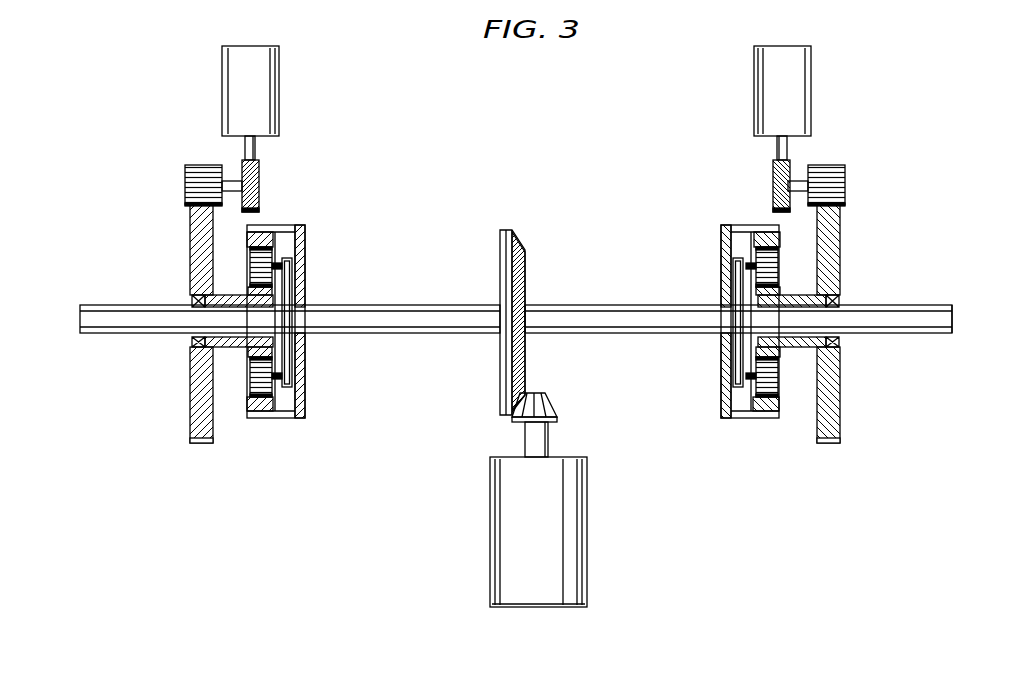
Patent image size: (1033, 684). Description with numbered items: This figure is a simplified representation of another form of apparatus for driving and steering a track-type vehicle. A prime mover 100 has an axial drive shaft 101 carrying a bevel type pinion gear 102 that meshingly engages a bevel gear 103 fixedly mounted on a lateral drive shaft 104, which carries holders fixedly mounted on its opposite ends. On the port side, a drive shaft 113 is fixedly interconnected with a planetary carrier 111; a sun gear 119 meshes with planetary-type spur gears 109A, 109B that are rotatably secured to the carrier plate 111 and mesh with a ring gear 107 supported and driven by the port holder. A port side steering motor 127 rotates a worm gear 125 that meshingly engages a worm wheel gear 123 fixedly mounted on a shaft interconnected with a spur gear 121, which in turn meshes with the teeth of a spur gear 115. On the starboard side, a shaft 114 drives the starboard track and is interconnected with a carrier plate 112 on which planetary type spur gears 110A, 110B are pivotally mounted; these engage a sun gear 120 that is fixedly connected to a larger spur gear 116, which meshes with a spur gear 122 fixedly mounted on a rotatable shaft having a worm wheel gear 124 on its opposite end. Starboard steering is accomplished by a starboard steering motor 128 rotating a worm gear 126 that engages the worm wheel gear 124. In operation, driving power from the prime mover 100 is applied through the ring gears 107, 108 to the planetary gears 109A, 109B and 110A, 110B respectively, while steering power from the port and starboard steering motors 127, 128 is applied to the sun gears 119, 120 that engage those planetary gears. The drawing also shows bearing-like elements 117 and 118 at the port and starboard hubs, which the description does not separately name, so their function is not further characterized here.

The prime mover 100 is at (587, 551).
The axial drive shaft 101 is at (525, 441).
The bevel type pinion gear 102 is at (552, 400).
The bevel gear 103 is at (525, 268).
The lateral drive shaft 104 is at (610, 306).
The ring gear 107 is at (266, 231).
The ring gear 108 is at (757, 228).
The planetary-type spur gear 109A is at (252, 270).
The planetary-type spur gear 109B is at (250, 392).
The planetary type spur gear 110A is at (783, 262).
The planetary type spur gear 110B is at (777, 375).
The planetary carrier 111 is at (290, 357).
The carrier plate 112 is at (733, 353).
The drive shaft 113 is at (100, 306).
The shaft 114 is at (903, 306).
The spur gear 115 is at (195, 443).
The spur gear 116 is at (833, 443).
The bearing 117 is at (193, 341).
The bearing 118 is at (840, 341).
The sun gear 119 is at (248, 351).
The sun gear 120 is at (780, 353).
The spur gear 121 is at (200, 166).
The spur gear 122 is at (840, 167).
The worm wheel gear 123 is at (260, 207).
The worm wheel gear 124 is at (775, 207).
The worm gear 125 is at (253, 176).
The worm gear 126 is at (773, 173).
The port side steering motor 127 is at (281, 64).
The starboard steering motor 128 is at (755, 75).